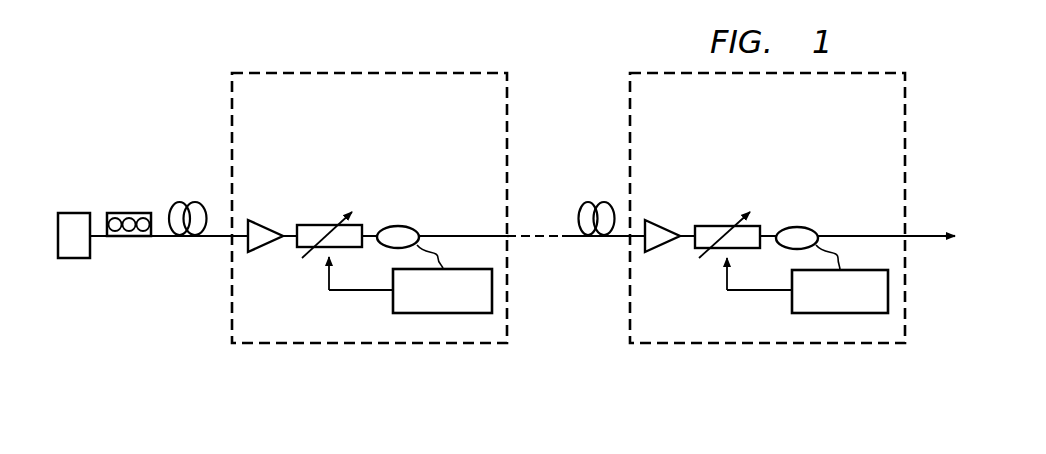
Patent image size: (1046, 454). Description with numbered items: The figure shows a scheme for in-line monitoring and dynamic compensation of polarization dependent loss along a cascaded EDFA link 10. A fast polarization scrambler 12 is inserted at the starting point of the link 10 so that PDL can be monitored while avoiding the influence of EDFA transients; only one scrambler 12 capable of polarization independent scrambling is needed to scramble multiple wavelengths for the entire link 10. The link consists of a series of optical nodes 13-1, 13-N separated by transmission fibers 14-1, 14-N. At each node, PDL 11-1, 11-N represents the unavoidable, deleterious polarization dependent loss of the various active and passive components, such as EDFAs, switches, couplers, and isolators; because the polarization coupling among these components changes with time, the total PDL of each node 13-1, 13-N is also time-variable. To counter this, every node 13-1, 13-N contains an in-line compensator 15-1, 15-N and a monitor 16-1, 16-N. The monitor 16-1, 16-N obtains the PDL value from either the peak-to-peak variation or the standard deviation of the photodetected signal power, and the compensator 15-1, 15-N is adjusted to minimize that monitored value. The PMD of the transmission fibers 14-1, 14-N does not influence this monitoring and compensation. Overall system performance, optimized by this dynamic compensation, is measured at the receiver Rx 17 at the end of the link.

The cascaded EDFA link 10 is at (226, 72).
The PDL 11-1 is at (260, 253).
The PDL 11-N is at (657, 251).
The fast polarization scrambler 12 is at (130, 237).
The optical node 13-1 is at (509, 279).
The optical node 13-N is at (629, 117).
The transmission fiber 14-1 is at (178, 201).
The transmission fiber 14-N is at (590, 201).
The in-line compensator 15-1 is at (330, 225).
The in-line compensator 15-N is at (727, 226).
The monitor 16-1 is at (393, 300).
The monitor 16-N is at (792, 302).
The receiver Rx 17 is at (925, 240).